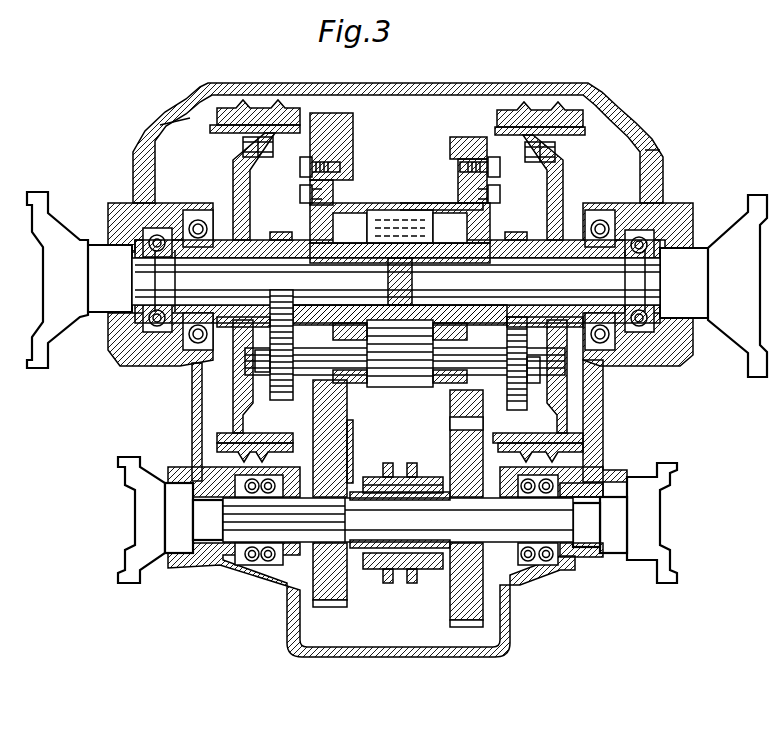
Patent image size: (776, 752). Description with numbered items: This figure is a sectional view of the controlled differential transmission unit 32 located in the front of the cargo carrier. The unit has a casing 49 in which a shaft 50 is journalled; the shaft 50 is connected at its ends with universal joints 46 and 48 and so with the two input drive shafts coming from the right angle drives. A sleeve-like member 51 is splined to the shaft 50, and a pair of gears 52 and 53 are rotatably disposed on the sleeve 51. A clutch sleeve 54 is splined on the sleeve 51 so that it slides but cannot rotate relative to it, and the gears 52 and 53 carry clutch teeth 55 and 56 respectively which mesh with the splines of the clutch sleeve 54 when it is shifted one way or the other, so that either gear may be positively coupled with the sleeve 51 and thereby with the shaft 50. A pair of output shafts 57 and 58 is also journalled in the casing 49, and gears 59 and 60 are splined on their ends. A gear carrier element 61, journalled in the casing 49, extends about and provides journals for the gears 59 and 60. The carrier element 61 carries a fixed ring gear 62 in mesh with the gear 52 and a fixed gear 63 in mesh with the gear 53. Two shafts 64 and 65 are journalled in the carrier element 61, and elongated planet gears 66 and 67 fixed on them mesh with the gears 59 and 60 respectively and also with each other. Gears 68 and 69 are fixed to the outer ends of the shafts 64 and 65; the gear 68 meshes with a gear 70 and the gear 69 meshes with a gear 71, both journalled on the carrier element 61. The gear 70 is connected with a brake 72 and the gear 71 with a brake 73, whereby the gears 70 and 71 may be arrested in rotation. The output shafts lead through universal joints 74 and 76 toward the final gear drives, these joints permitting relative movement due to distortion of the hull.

The transmission unit 32 is at (548, 80).
The universal joint 46 is at (663, 583).
The universal joint 48 is at (130, 583).
The casing 49 is at (648, 148).
The shaft 50 is at (562, 537).
The sleeve-like member 51 is at (497, 562).
The gear 52 is at (465, 590).
The gear 53 is at (335, 607).
The clutch sleeve 54 is at (398, 475).
The clutch teeth 55 is at (440, 472).
The clutch teeth 56 is at (362, 490).
The shaft 57 is at (655, 275).
The shaft 58 is at (133, 270).
The gear 59 is at (437, 200).
The gear 60 is at (355, 218).
The gear carrier element 61 is at (500, 180).
The ring gear 62 is at (466, 137).
The gear 63 is at (345, 122).
The shaft 64 is at (510, 395).
The shaft 65 is at (303, 385).
The elongated planet gear 66 is at (436, 383).
The elongated planet gear 67 is at (362, 380).
The gear 68 is at (550, 395).
The gear 69 is at (255, 380).
The gear 70 is at (512, 240).
The gear 71 is at (286, 232).
The brake 72 is at (573, 100).
The brake 73 is at (205, 123).
The universal joint 74 is at (752, 195).
The universal joint 76 is at (40, 192).